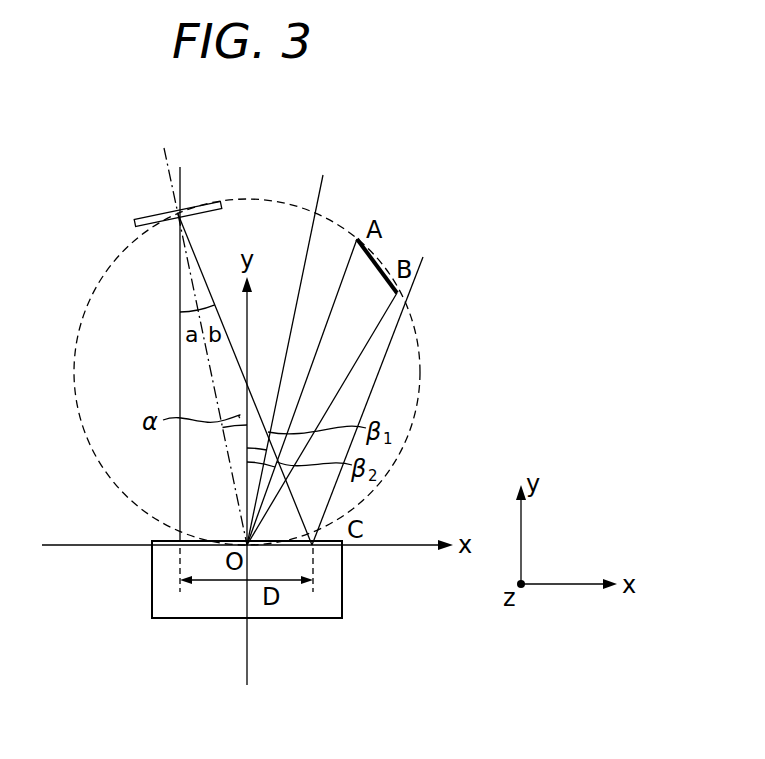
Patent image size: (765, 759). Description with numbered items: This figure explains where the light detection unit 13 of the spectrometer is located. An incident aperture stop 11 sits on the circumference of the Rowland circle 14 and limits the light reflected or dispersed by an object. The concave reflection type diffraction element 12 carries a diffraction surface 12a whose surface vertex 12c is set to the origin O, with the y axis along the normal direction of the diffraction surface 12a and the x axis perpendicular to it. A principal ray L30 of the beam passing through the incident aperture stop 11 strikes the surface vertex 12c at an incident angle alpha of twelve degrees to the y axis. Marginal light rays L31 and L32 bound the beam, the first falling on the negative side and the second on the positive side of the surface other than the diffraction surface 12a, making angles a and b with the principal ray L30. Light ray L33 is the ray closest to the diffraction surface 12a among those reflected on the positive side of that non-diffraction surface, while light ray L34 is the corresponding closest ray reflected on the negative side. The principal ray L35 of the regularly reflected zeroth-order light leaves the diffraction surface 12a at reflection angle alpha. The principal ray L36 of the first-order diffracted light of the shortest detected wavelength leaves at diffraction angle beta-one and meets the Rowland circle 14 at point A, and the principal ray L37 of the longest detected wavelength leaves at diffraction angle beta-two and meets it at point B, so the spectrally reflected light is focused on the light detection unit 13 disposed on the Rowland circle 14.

The incident aperture stop 11 is at (140, 216).
The diffraction element 12 is at (332, 595).
The diffraction surface 12a is at (273, 543).
The surface vertex 12c is at (244, 541).
The light detection unit 13 is at (382, 257).
The Rowland circle 14 is at (82, 428).
The principal ray L30 is at (213, 382).
The marginal light ray L31 is at (178, 278).
The marginal light ray L32 is at (197, 262).
The light ray reflected on positive-side non-diffraction surface L33 is at (379, 378).
The light ray reflected on negative-side non-diffraction surface L34 is at (170, 182).
The principal ray of regularly reflected light L35 is at (323, 195).
The principal ray of first-order diffracted light of shortest wavelength L36 is at (347, 270).
The principal ray of first-order diffracted light of longest wavelength L37 is at (373, 330).